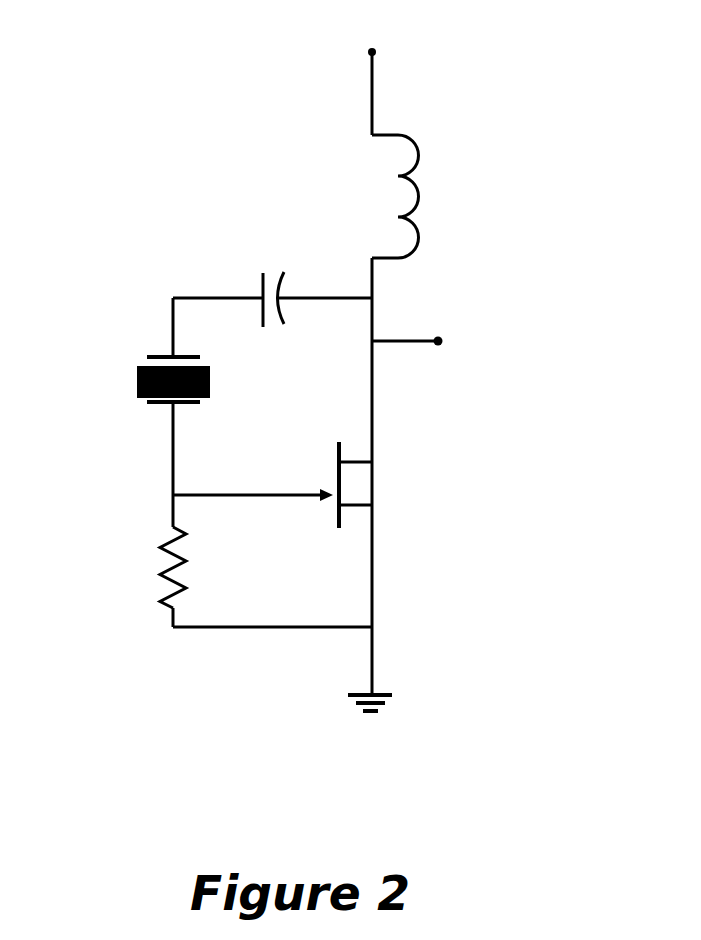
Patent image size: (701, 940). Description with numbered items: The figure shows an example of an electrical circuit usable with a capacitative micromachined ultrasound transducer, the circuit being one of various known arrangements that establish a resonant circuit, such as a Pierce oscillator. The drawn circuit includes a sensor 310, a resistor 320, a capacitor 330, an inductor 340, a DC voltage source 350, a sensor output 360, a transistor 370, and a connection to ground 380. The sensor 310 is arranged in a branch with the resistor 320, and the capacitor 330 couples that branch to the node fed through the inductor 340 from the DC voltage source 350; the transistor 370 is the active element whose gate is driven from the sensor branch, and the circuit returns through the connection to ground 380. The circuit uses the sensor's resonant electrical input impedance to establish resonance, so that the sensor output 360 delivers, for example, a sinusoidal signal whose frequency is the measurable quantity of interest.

The sensor 310 is at (117, 380).
The resistor 320 is at (147, 565).
The capacitor 330 is at (268, 245).
The inductor 340 is at (440, 195).
The DC voltage source 350 is at (396, 52).
The sensor output 360 is at (450, 368).
The transistor 370 is at (363, 480).
The connection to ground 380 is at (401, 718).